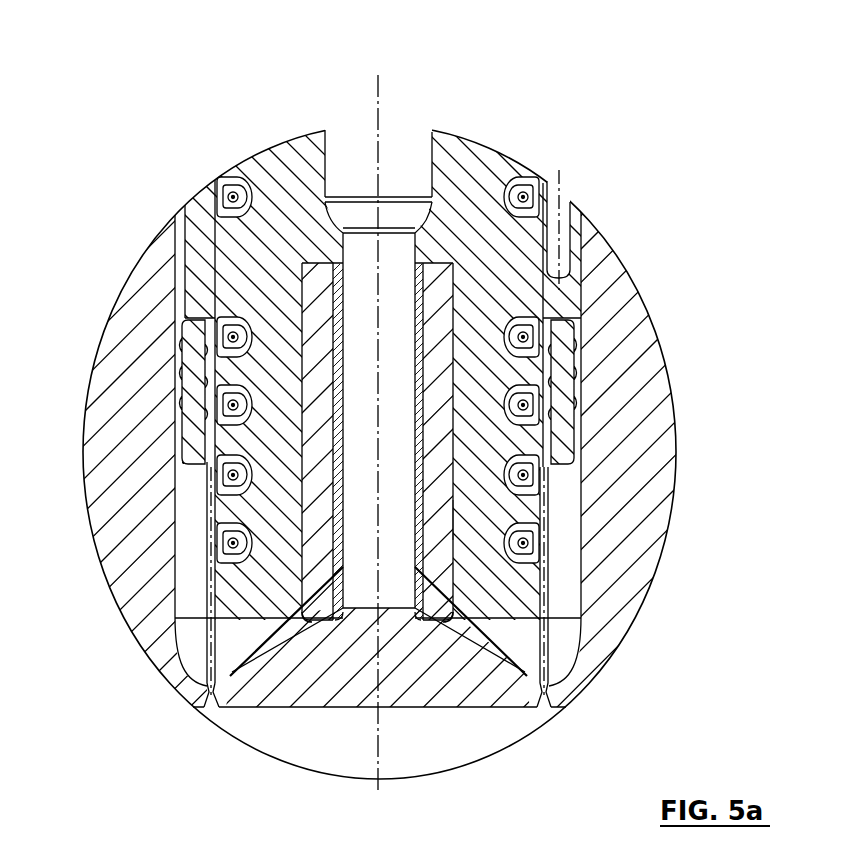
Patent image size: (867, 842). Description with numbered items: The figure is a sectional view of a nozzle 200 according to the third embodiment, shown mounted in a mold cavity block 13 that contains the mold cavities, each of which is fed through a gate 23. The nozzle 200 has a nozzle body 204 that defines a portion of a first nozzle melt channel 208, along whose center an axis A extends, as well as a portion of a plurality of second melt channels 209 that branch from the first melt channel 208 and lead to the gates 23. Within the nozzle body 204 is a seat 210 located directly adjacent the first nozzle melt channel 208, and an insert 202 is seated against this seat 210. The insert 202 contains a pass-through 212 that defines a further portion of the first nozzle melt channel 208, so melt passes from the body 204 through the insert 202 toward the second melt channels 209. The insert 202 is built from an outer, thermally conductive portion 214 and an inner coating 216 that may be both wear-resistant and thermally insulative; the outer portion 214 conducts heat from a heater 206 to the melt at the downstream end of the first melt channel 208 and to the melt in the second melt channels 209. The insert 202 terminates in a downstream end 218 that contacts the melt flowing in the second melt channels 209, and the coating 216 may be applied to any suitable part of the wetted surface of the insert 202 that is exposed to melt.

The nozzle 200 is at (712, 411).
The mold cavity block 13 is at (615, 280).
The nozzle body 204 is at (480, 167).
The first nozzle melt channel 208 is at (412, 140).
The pass-through 212 is at (363, 266).
The seat 210 is at (320, 263).
The insert 202 is at (443, 307).
The heater 206 is at (553, 338).
The outer thermally conductive portion 214 is at (447, 507).
The inner coating 216 is at (452, 525).
The downstream end 218 is at (368, 610).
The gate 23 is at (200, 706).
The second melt channels 209 is at (303, 615).
The axis A is at (380, 92).